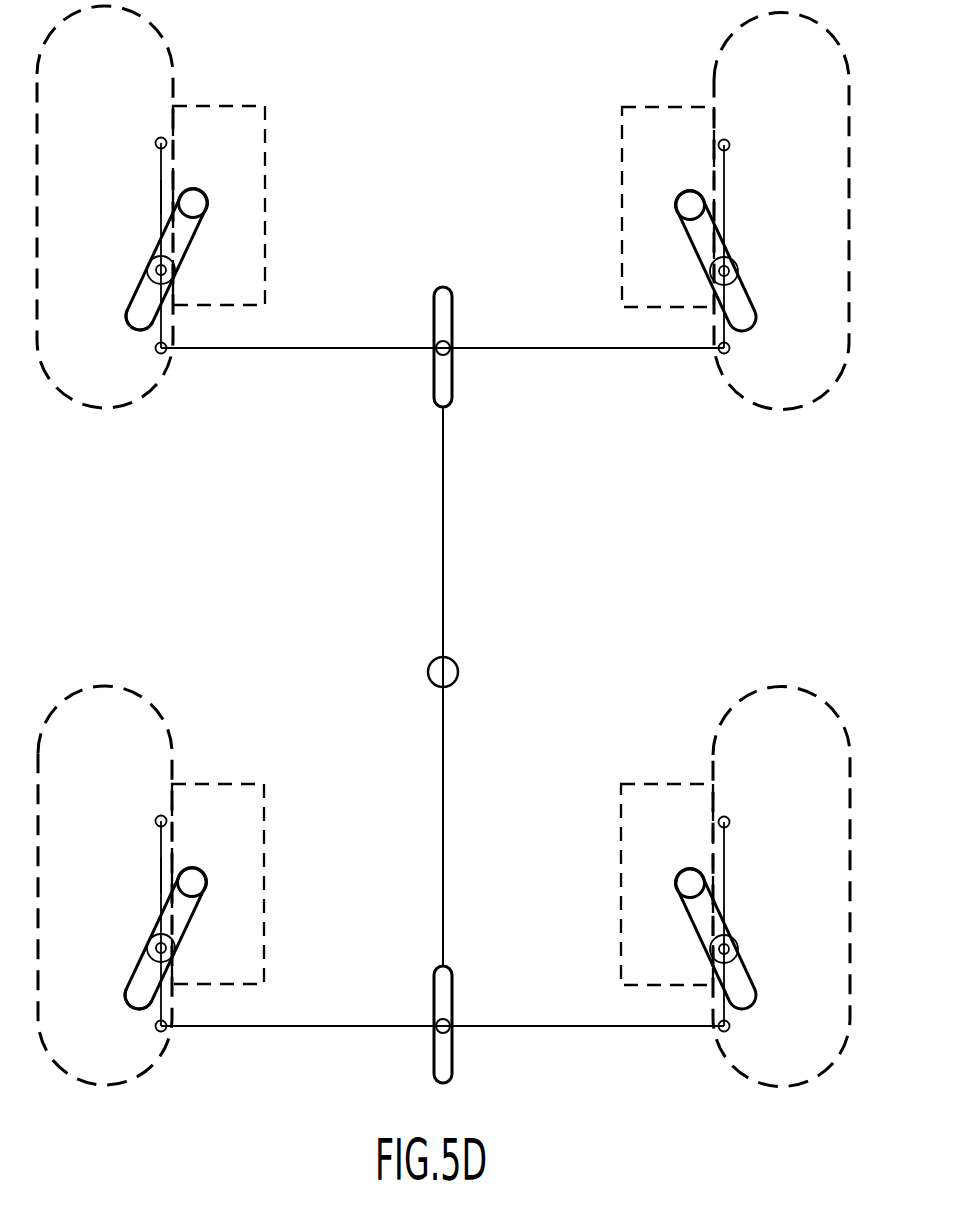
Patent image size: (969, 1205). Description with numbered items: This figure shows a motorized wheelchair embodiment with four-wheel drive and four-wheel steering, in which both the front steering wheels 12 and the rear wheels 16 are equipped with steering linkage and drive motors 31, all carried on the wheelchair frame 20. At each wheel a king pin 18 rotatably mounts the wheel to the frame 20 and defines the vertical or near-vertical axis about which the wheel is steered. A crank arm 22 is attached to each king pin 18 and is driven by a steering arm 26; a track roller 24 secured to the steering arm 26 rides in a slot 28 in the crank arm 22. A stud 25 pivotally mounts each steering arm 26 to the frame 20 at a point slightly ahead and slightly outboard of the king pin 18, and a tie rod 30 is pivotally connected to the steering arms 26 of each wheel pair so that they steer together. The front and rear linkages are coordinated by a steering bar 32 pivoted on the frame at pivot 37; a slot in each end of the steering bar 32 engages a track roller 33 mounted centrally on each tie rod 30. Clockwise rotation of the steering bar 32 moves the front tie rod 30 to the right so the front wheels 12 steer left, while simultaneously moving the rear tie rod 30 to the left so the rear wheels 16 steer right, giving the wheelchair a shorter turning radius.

The front steering wheels 12 is at (160, 36).
The rear wheels 16 is at (122, 689).
The king pin 18 is at (206, 203).
The frame 20 is at (583, 550).
The crank arm 22 is at (196, 233).
The track roller 24 is at (148, 273).
The stud 25 is at (155, 143).
The steering arm 26 is at (160, 196).
The slot 28 is at (142, 312).
The tie rod 30 is at (298, 348).
The drive motor 31 is at (265, 143).
The steering bar 32 is at (444, 472).
The track roller 33 is at (450, 353).
The pivot 37 is at (458, 669).